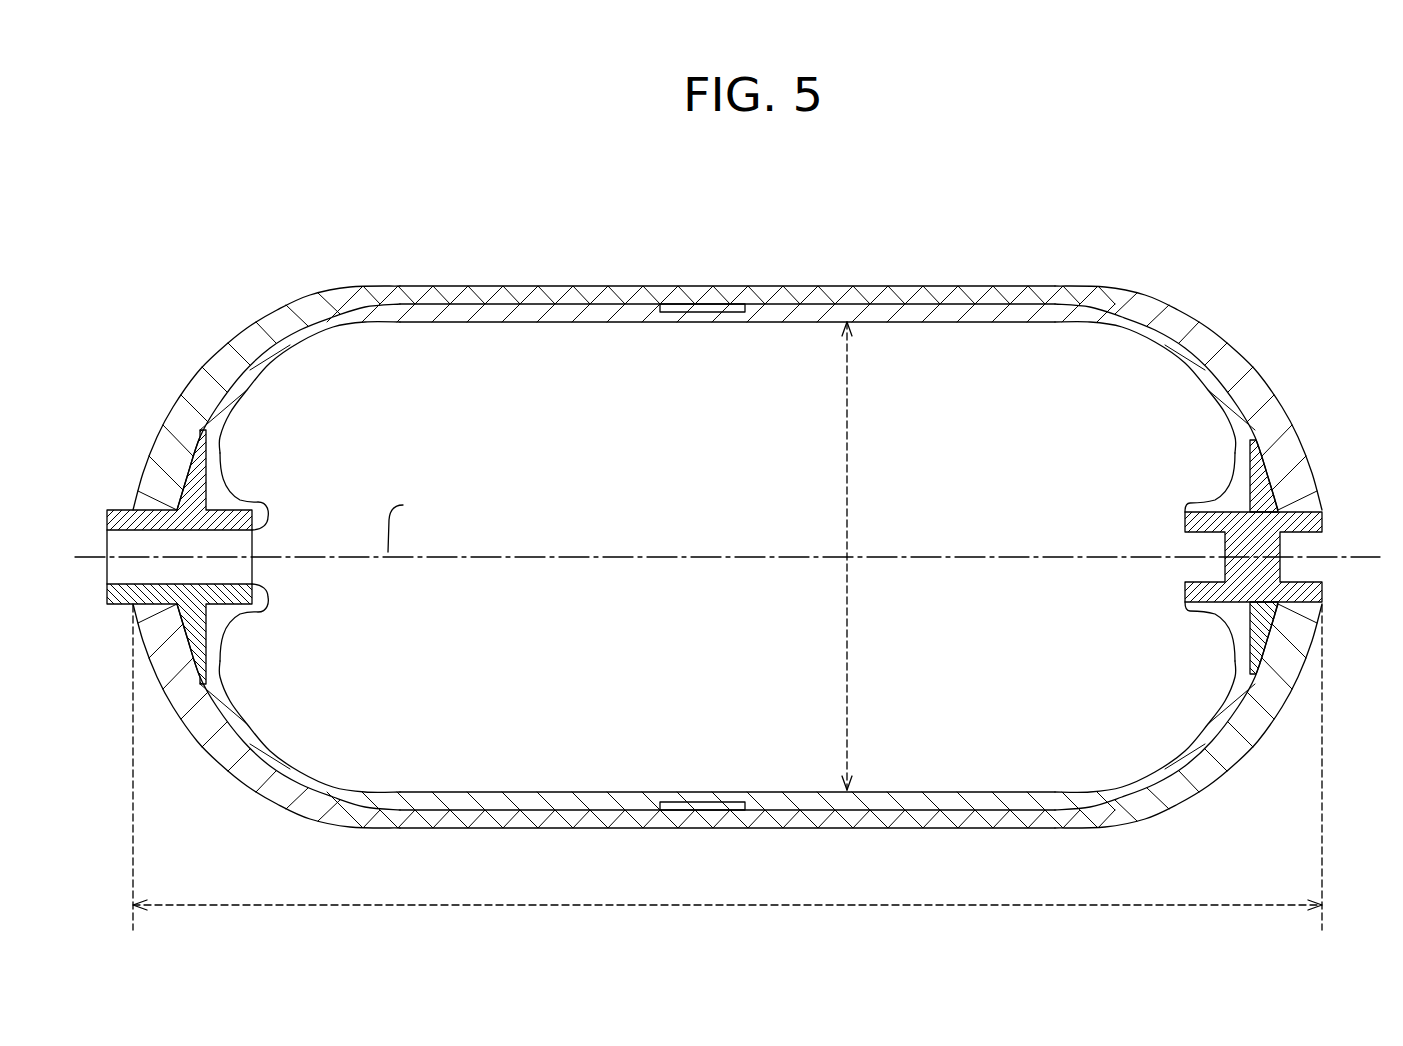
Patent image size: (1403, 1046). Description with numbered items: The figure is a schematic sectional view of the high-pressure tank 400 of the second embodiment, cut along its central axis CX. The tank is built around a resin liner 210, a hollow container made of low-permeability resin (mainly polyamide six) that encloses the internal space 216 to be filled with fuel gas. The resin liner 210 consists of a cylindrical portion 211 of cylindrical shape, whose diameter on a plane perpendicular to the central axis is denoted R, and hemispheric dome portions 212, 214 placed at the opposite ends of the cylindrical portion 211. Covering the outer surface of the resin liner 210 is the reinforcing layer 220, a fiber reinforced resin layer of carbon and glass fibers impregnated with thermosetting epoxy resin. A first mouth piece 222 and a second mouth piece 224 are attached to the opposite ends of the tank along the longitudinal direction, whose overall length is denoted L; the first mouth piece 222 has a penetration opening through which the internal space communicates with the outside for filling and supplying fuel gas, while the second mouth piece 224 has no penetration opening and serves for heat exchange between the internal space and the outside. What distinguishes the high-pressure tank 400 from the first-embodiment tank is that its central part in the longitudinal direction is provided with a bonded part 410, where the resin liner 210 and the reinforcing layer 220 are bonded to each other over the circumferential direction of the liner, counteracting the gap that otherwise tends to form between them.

The high-pressure tank 400 is at (189, 118).
The resin liner 210 is at (598, 163).
The cylindrical portion 211 is at (643, 310).
The dome portion 212 is at (276, 330).
The dome portion 214 is at (1125, 310).
The internal space 216 is at (747, 534).
The reinforcing layer 220 is at (236, 344).
The first mouth piece 222 is at (132, 509).
The second mouth piece 224 is at (1315, 593).
The bonded part 410 is at (683, 313).